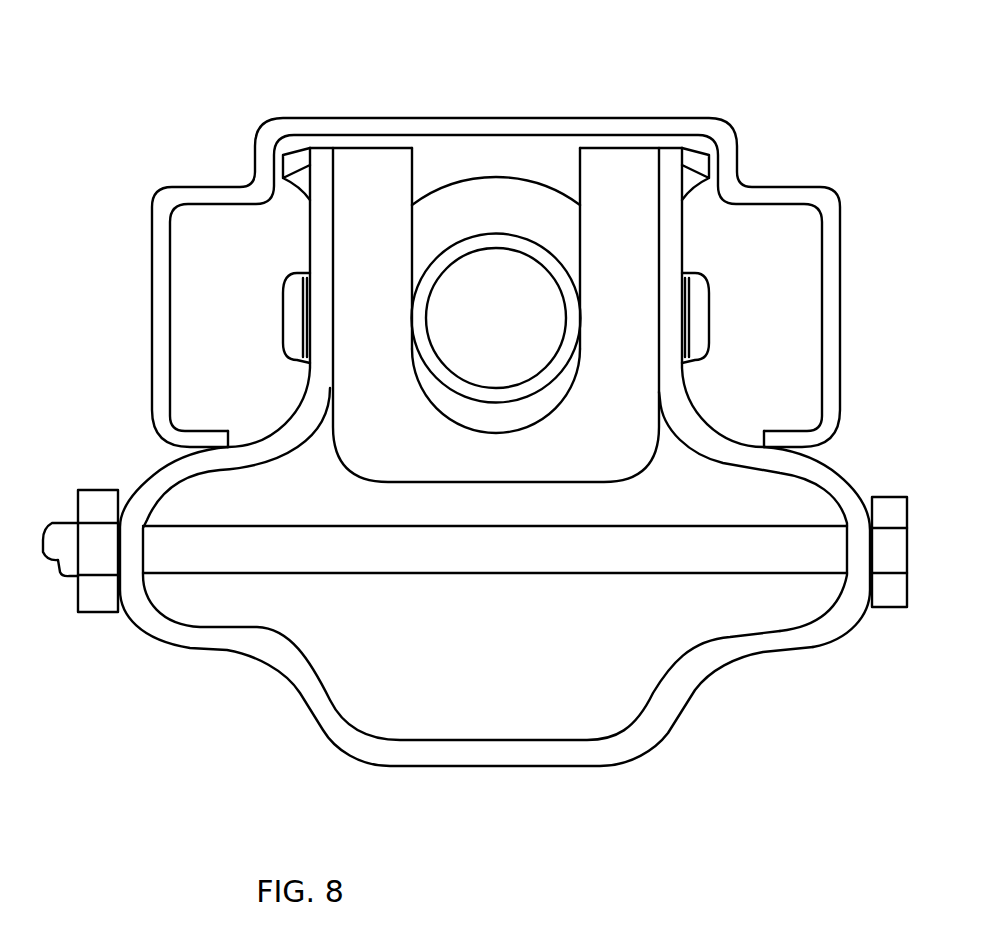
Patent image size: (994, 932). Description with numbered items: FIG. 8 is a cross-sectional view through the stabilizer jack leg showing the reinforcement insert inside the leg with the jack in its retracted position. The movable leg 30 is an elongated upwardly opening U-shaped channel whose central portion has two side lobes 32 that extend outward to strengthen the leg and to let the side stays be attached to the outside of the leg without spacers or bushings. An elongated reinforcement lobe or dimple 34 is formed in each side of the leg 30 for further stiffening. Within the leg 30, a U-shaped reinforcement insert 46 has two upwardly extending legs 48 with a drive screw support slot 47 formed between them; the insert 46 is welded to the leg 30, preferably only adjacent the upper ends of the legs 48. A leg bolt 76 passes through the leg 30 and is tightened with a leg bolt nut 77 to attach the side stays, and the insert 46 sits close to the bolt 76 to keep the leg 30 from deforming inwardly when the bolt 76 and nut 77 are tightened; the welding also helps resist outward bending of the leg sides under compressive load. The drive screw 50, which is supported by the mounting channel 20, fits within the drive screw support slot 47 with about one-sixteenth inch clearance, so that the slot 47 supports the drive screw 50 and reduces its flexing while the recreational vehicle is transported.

The mounting channel 20 is at (763, 193).
The movable leg 30 is at (627, 745).
The side lobes 32 is at (837, 488).
The reinforcement lobe or dimple 34 is at (704, 320).
The reinforcement insert 46 is at (630, 257).
The drive screw support slot 47 is at (466, 413).
The upwardly extending legs 48 is at (368, 152).
The drive screw 50 is at (468, 332).
The leg bolt 76 is at (478, 563).
The leg bolt nut 77 is at (98, 595).